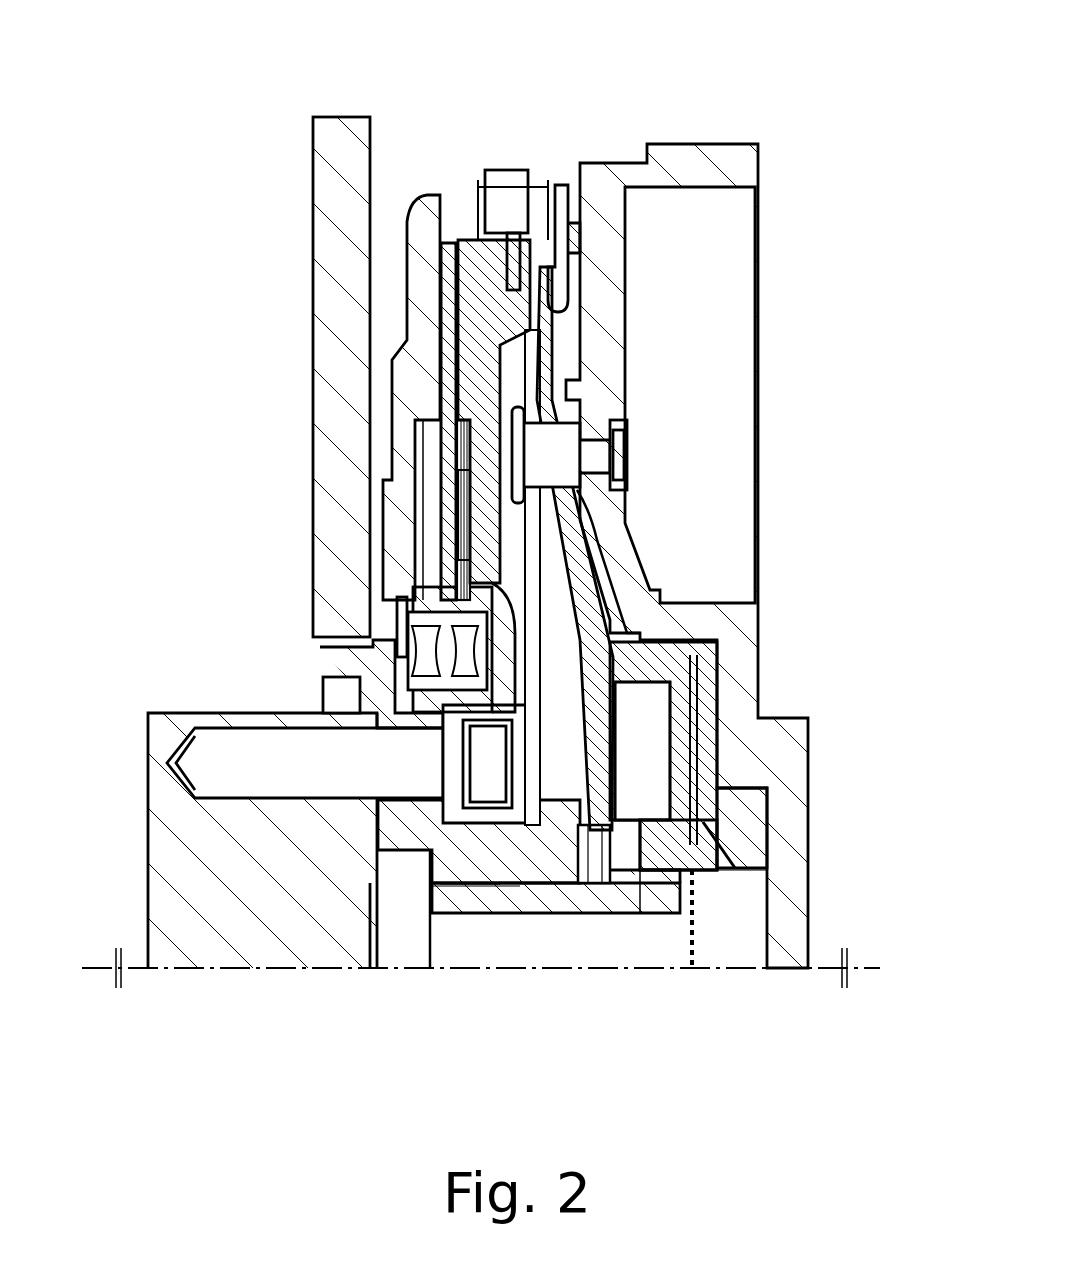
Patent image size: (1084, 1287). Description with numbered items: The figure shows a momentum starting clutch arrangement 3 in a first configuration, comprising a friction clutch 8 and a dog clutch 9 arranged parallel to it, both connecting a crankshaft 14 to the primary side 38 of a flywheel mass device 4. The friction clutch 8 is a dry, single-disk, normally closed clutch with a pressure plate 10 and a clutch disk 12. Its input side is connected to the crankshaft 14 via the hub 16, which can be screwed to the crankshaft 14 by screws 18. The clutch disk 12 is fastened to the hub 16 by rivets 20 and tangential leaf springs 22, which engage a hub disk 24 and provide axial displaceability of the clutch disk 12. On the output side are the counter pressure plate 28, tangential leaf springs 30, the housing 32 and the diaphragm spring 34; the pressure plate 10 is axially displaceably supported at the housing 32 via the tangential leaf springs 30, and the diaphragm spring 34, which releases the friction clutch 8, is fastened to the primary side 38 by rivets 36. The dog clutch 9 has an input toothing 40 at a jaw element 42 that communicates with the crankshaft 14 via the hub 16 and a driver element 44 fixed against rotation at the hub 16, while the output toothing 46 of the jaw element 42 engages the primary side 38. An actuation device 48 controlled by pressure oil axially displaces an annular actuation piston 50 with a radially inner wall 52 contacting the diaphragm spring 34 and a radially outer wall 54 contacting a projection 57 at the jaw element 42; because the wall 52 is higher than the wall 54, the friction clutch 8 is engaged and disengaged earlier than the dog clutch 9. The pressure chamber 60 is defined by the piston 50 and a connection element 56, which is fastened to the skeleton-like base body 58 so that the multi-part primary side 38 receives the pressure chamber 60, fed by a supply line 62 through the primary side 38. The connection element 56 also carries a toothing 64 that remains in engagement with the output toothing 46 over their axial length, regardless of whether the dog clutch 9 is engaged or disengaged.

The momentum starting clutch arrangement 3 is at (230, 82).
The flywheel mass device 4 is at (843, 992).
The friction clutch 8 is at (465, 140).
The dog clutch 9 is at (510, 985).
The pressure plate 10 is at (485, 275).
The clutch disk 12 is at (445, 376).
The crankshaft 14 is at (190, 838).
The hub 16 is at (400, 815).
The screws 18 is at (240, 770).
The rivets 20 is at (450, 482).
The tangential leaf springs 22 is at (500, 545).
The hub disk 24 is at (470, 592).
The counter pressure plate 28 is at (425, 280).
The tangential leaf springs 30 is at (515, 190).
The housing 32 is at (562, 230).
The diaphragm spring 34 is at (548, 322).
The rivets 36 is at (620, 440).
The primary side 38 is at (762, 628).
The input toothing 40 is at (453, 892).
The jaw element 42 is at (490, 900).
The driver element 44 is at (555, 860).
The output toothing 46 is at (669, 850).
The actuation device 48 is at (735, 888).
The actuation piston 50 is at (680, 718).
The wall 52 is at (650, 650).
The wall 54 is at (630, 828).
The connection element 56 is at (745, 798).
The projection 57 is at (630, 780).
The base body 58 is at (612, 292).
The pressure chamber 60 is at (690, 745).
The supply line 62 is at (725, 865).
The toothing 64 is at (651, 880).